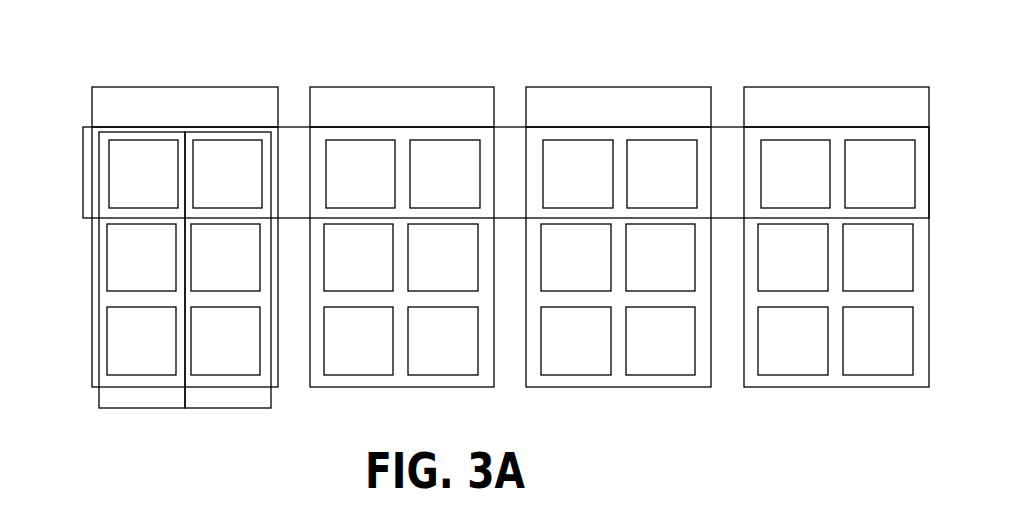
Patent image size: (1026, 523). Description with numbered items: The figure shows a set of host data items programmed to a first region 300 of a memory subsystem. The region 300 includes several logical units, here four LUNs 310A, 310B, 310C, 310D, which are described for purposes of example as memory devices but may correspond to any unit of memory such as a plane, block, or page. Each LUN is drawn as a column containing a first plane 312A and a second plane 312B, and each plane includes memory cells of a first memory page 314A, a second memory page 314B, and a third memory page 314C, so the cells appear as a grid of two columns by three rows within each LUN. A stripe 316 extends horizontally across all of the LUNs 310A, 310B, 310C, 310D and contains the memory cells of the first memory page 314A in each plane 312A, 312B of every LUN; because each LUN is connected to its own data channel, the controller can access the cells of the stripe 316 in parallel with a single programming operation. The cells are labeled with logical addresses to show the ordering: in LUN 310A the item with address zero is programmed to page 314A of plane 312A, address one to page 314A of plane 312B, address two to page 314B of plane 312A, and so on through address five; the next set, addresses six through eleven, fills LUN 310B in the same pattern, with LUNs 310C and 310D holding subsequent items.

The first region 300 is at (104, 35).
The LUN 310A is at (237, 117).
The LUN 310B is at (455, 117).
The LUN 310C is at (673, 117).
The LUN 310D is at (892, 117).
The first plane 312A is at (142, 408).
The second plane 312B is at (228, 408).
The first memory page 314A is at (108, 170).
The second memory page 314B is at (107, 258).
The third memory page 314C is at (107, 343).
The stripe 316 is at (295, 127).